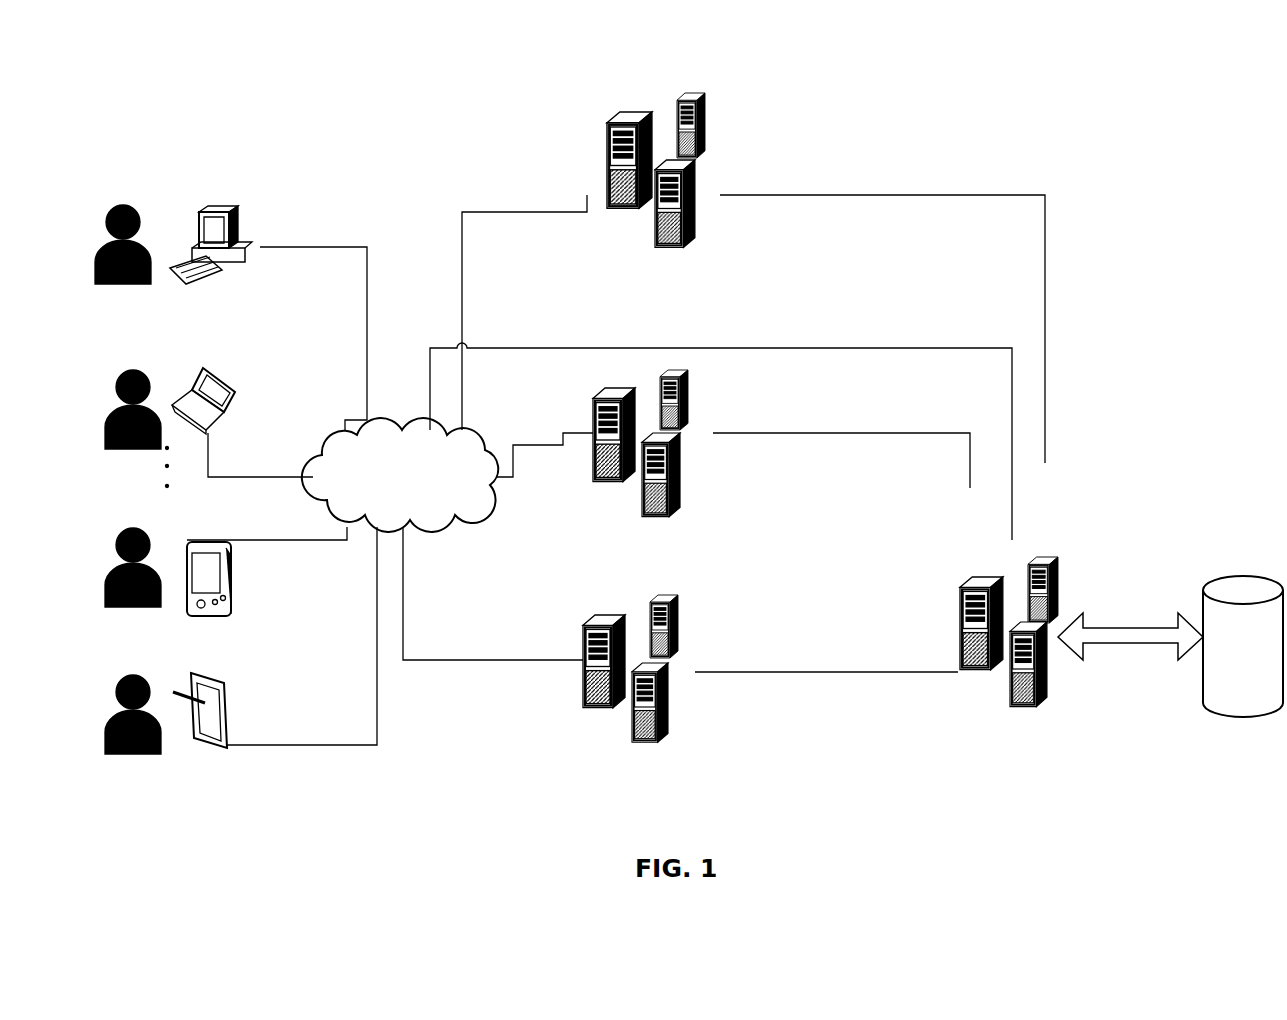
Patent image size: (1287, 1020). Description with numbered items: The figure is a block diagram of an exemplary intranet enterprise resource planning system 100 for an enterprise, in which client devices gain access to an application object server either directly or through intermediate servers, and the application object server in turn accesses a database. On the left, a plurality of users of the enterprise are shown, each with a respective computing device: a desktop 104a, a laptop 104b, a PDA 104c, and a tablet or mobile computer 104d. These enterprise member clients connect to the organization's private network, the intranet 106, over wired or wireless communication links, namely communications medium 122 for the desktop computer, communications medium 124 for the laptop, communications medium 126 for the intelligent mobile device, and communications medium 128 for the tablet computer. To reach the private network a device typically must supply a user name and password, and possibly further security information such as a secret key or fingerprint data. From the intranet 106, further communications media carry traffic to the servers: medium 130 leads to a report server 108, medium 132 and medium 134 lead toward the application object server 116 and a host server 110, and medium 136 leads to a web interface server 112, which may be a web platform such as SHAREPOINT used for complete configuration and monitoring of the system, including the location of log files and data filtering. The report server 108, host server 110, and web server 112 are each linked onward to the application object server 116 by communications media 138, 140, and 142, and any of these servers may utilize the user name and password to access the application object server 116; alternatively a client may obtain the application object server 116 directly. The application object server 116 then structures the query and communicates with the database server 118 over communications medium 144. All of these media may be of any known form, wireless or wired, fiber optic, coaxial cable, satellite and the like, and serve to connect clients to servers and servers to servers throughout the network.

The intranet enterprise resource planning system 100 is at (1121, 98).
The desktop 104a is at (283, 235).
The laptop 104b is at (237, 408).
The PDA 104c is at (230, 576).
The tablet or mobile computer 104d is at (228, 704).
The intranet 106 is at (432, 432).
The report server 108 is at (720, 147).
The host server 110 is at (678, 438).
The web interface server 112 is at (688, 584).
The application object server 116 is at (1028, 555).
The database server 118 is at (1251, 567).
The communications medium 122 is at (339, 338).
The communications medium 124 is at (260, 455).
The communications medium 126 is at (267, 560).
The communications medium 128 is at (302, 636).
The communications medium 130 is at (524, 303).
The communications medium 132 is at (721, 434).
The communications medium 134 is at (545, 455).
The communications medium 136 is at (493, 593).
The communications medium 138 is at (882, 319).
The communications medium 140 is at (841, 451).
The communications medium 142 is at (826, 662).
The communications medium 144 is at (1130, 633).